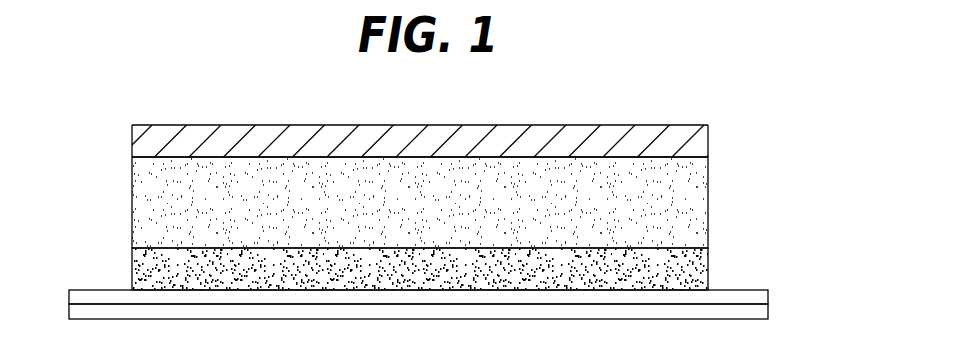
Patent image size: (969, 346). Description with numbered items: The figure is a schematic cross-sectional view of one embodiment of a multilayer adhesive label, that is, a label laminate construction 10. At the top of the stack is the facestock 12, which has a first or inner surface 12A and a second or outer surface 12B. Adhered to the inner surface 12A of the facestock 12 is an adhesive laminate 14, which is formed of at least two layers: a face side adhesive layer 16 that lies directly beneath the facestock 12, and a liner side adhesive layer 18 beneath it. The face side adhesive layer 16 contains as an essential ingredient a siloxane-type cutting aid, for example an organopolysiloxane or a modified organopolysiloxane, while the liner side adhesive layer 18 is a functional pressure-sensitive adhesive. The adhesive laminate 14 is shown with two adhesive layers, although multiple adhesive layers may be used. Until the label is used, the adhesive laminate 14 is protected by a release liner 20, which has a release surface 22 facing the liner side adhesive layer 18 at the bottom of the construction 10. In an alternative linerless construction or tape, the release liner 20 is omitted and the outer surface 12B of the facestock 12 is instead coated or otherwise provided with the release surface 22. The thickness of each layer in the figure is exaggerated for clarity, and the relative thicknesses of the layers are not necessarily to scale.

The construction 10 is at (786, 198).
The facestock 12 is at (687, 143).
The first surface 12A is at (157, 157).
The second surface 12B is at (310, 125).
The adhesive laminate 14 is at (413, 219).
The face side adhesive layer 16 is at (687, 179).
The liner side adhesive layer 18 is at (687, 269).
The release liner 20 is at (765, 311).
The release surface 22 is at (765, 297).